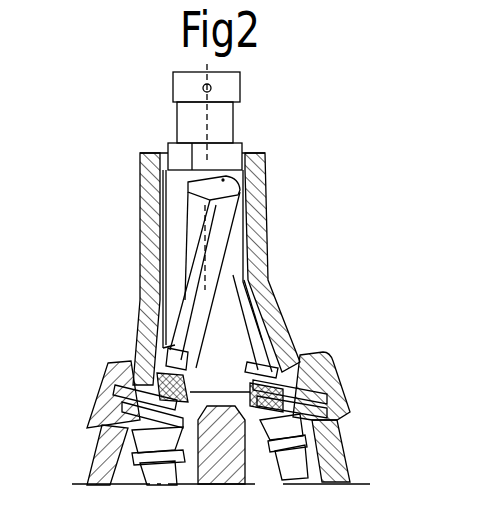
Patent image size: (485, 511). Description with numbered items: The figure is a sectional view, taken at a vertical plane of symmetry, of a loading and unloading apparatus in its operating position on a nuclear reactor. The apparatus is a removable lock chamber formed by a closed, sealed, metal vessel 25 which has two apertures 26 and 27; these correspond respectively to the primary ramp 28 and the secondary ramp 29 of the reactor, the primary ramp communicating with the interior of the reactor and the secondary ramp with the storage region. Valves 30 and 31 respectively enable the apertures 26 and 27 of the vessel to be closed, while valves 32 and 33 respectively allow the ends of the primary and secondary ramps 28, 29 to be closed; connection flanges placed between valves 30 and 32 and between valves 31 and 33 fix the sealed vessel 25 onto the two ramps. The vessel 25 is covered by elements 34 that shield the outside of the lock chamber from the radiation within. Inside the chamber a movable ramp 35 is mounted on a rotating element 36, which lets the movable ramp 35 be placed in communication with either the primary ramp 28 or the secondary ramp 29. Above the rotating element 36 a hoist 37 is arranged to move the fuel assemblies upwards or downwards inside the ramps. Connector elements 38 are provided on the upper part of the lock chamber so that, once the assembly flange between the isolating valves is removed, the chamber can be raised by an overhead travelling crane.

The vessel 25 is at (262, 318).
The aperture 26 is at (280, 338).
The aperture 27 is at (155, 368).
The primary ramp 28 is at (295, 458).
The secondary ramp 29 is at (143, 472).
The valve 30 is at (318, 353).
The valve 31 is at (125, 362).
The valve 32 is at (330, 423).
The valve 33 is at (120, 385).
The shielding elements 34 is at (255, 240).
The movable ramp 35 is at (222, 196).
The rotating element 36 is at (225, 165).
The hoist 37 is at (223, 127).
The connector elements 38 is at (211, 88).